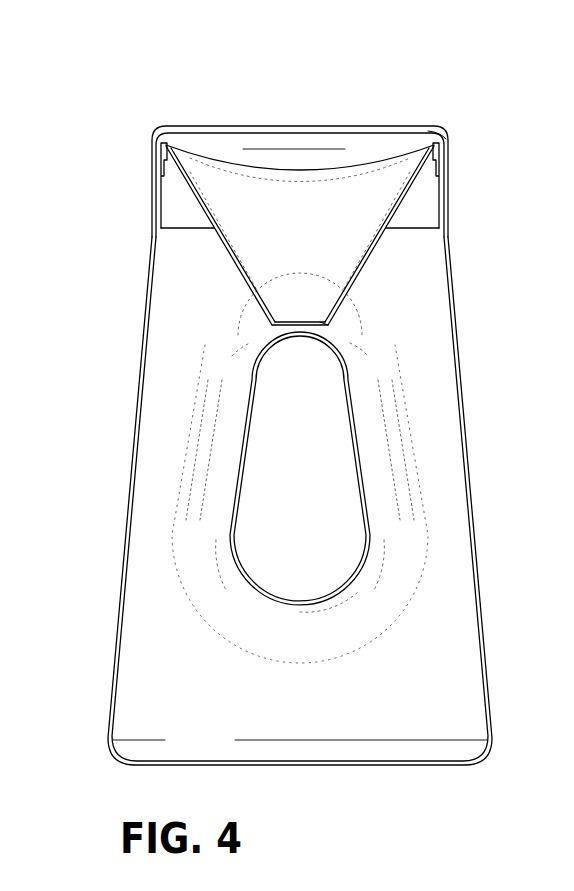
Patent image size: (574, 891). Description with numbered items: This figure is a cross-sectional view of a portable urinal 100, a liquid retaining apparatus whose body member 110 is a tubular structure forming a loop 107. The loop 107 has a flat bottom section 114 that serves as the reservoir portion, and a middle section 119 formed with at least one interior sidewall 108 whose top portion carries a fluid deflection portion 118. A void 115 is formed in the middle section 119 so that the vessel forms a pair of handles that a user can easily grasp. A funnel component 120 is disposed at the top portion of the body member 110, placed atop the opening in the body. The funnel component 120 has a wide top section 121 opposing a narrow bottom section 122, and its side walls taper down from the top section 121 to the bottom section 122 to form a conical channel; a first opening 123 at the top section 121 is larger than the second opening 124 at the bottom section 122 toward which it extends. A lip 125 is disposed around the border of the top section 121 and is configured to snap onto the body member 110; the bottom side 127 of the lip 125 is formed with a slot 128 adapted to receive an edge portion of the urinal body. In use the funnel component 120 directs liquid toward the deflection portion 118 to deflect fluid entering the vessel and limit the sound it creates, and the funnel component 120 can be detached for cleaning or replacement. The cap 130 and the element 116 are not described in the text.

The portable urinal 100 is at (410, 105).
The body member 110 is at (470, 441).
The cap 130 is at (200, 127).
The first opening 123 is at (440, 130).
The lip 125 is at (161, 151).
The bottom side 127 is at (435, 152).
The top section 121 is at (233, 172).
The funnel component 120 is at (379, 255).
The bottom section 122 is at (298, 282).
The second opening 124 is at (318, 325).
The slot 128 is at (420, 165).
The void 115 is at (307, 535).
The fluid deflection portion 118 is at (268, 311).
The interior sidewall 108 is at (254, 353).
The recess right edge 116 is at (343, 343).
The middle section 119 is at (245, 428).
The loop 107 is at (165, 551).
The flat bottom section 114 is at (158, 650).